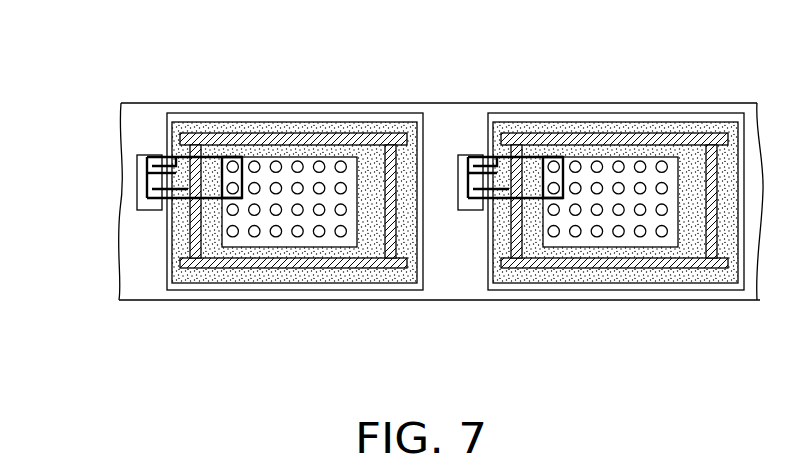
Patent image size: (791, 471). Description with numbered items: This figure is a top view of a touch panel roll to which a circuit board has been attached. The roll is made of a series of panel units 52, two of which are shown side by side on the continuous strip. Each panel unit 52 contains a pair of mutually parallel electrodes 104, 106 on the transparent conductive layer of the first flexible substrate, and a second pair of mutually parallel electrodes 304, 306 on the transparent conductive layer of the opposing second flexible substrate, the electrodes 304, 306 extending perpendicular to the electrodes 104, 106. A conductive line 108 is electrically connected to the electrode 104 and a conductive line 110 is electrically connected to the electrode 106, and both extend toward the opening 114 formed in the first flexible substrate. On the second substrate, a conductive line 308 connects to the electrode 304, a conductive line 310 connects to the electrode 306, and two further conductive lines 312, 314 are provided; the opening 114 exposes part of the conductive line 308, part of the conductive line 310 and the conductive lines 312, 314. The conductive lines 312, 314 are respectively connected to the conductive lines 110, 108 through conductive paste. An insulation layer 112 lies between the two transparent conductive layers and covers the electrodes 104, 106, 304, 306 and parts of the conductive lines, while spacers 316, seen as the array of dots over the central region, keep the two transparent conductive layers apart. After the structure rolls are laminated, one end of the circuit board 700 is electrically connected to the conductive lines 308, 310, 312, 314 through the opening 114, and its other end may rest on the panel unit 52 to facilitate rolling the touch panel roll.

The panel unit 52 is at (238, 113).
The electrode 104 is at (194, 258).
The electrode 106 is at (397, 246).
The conductive line 108 is at (163, 203).
The conductive line 110 is at (180, 160).
The insulation layer 112 is at (405, 130).
The opening 114 is at (147, 197).
The electrode 304 is at (295, 138).
The electrode 306 is at (304, 268).
The conductive line 308 is at (153, 166).
The conductive line 310 is at (153, 188).
The conductive line 312 is at (153, 176).
The conductive line 314 is at (155, 198).
The spacer 316 is at (255, 237).
The circuit board 700 is at (480, 180).